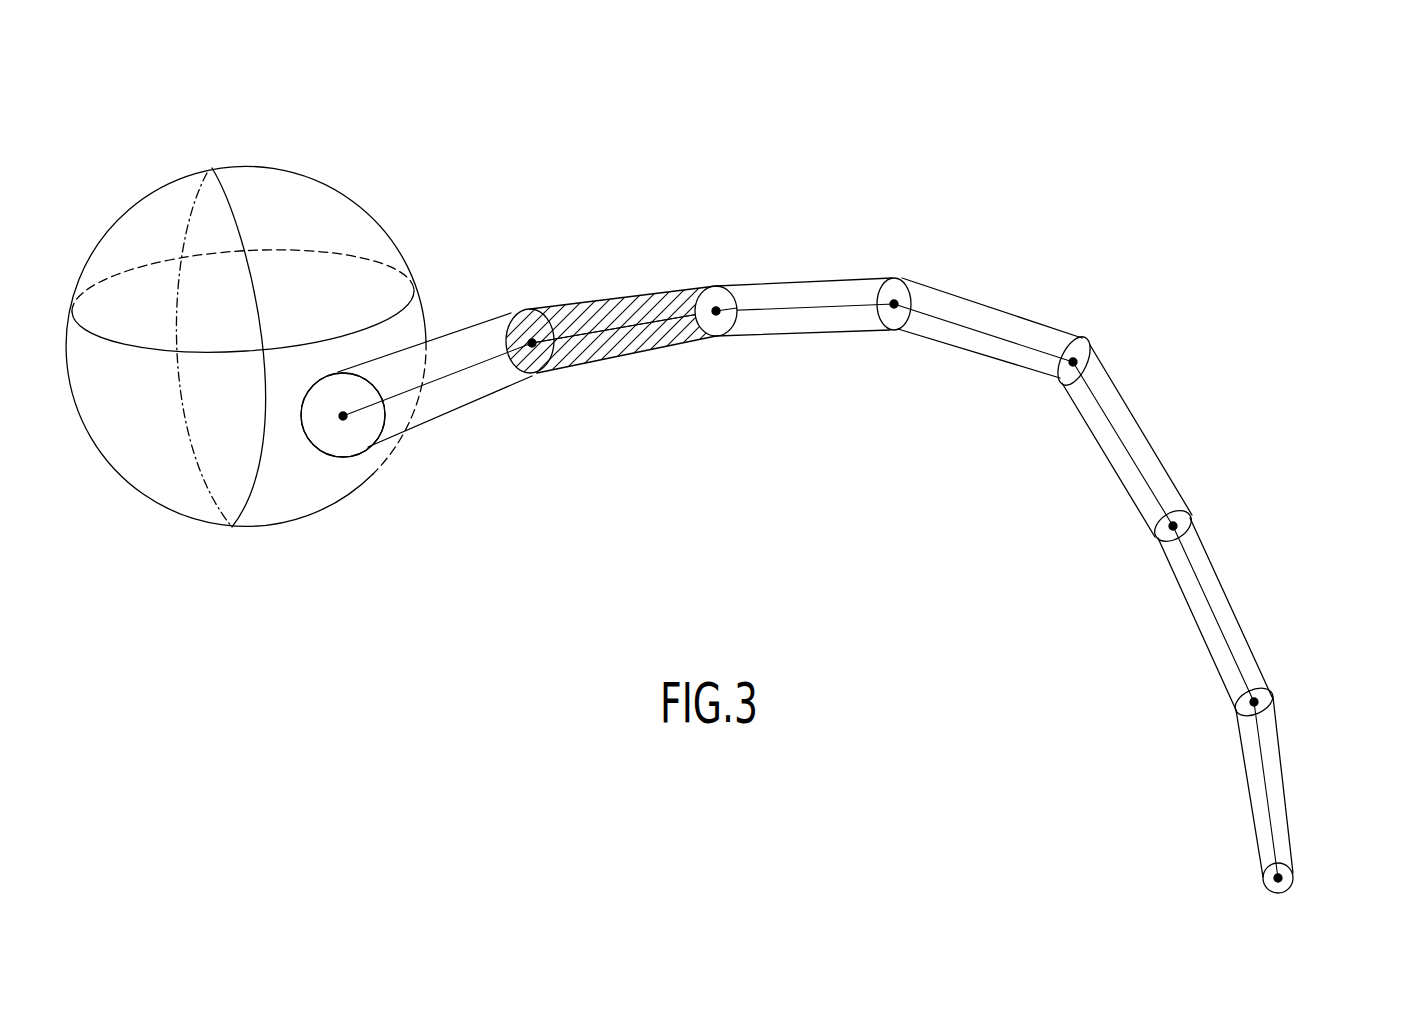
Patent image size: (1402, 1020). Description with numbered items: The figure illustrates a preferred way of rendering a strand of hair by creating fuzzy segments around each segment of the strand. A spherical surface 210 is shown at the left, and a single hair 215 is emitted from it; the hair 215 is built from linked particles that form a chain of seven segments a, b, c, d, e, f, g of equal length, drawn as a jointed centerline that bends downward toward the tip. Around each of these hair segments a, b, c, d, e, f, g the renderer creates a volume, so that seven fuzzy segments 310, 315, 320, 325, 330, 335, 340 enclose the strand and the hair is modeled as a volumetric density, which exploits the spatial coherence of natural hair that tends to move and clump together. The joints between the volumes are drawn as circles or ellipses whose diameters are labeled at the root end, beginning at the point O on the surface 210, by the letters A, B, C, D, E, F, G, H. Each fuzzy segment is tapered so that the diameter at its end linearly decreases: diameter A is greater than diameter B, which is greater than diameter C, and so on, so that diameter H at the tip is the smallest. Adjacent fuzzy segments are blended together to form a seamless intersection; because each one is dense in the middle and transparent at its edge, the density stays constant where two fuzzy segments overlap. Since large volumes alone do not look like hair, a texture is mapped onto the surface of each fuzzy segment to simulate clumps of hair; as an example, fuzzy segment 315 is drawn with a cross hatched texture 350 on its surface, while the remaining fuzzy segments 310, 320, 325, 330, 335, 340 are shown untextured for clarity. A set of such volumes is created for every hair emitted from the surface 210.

The surface 210 is at (253, 167).
The hair 215 is at (710, 516).
The fuzzy segment 310 is at (453, 418).
The fuzzy segment 315 is at (553, 300).
The cross hatched texture 350 is at (643, 298).
The fuzzy segment 320 is at (757, 281).
The fuzzy segment 325 is at (987, 302).
The fuzzy segment 330 is at (1153, 447).
The fuzzy segment 335 is at (1242, 627).
The fuzzy segment 340 is at (1280, 743).
The base joint / origin O is at (343, 415).
The diameter A is at (352, 537).
The diameter B is at (507, 235).
The diameter C is at (712, 217).
The diameter D is at (900, 210).
The diameter E is at (1120, 280).
The diameter F is at (1258, 487).
The diameter G is at (1335, 667).
The diameter H is at (1352, 868).
The hair segment a is at (456, 366).
The hair segment b is at (640, 330).
The hair segment c is at (792, 311).
The hair segment d is at (967, 331).
The hair segment e is at (1122, 440).
The hair segment f is at (1213, 603).
The hair segment g is at (1268, 782).